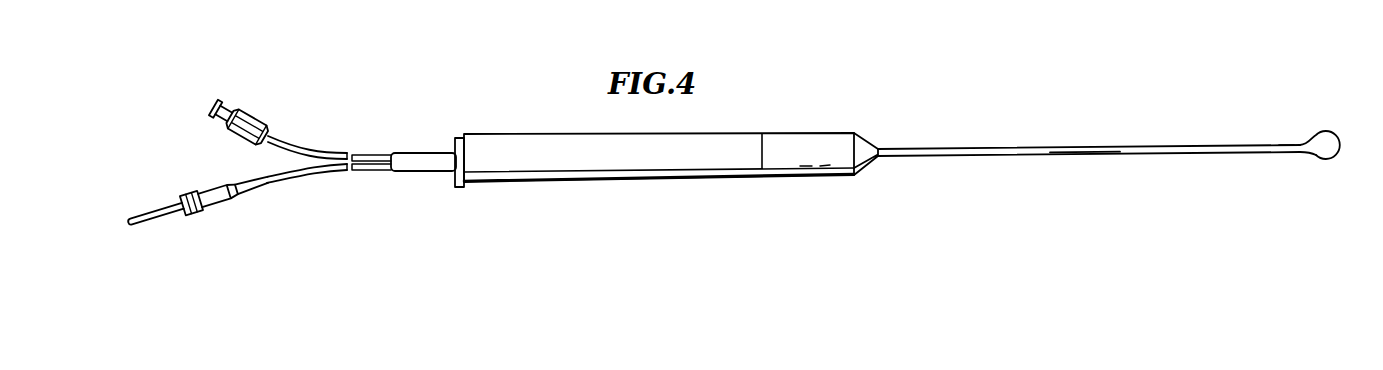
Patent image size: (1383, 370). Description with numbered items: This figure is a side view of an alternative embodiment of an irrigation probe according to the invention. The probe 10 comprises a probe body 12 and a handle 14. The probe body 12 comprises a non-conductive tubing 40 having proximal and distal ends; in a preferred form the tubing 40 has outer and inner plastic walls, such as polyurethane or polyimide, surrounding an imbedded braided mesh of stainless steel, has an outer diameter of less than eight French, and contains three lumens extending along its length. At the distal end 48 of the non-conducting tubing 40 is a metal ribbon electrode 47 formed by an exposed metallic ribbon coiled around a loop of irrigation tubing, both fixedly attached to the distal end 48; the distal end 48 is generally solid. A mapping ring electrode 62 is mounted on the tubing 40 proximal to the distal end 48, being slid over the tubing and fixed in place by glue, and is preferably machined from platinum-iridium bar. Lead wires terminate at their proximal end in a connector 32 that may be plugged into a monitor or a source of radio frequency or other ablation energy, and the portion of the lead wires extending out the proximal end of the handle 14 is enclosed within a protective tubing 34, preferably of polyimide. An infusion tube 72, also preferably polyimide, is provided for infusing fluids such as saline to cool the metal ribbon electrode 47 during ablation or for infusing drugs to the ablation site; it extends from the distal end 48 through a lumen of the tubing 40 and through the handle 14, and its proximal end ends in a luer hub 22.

The probe 10 is at (875, 128).
The probe body 12 is at (1133, 145).
The handle 14 is at (512, 130).
The luer hub 22 is at (262, 118).
The connector 32 is at (208, 199).
The protective tubing 34 is at (297, 179).
The non-conductive tubing 40 is at (1053, 156).
The metal ribbon electrode 47 is at (1336, 131).
The distal end 48 is at (1297, 153).
The mapping ring electrode 62 is at (1282, 149).
The infusion tube 72 is at (312, 149).